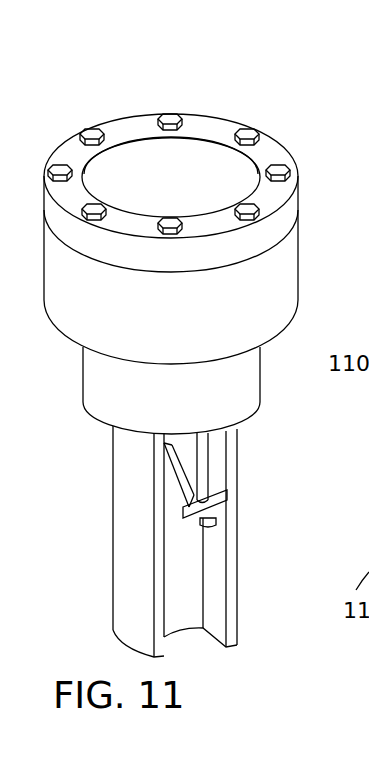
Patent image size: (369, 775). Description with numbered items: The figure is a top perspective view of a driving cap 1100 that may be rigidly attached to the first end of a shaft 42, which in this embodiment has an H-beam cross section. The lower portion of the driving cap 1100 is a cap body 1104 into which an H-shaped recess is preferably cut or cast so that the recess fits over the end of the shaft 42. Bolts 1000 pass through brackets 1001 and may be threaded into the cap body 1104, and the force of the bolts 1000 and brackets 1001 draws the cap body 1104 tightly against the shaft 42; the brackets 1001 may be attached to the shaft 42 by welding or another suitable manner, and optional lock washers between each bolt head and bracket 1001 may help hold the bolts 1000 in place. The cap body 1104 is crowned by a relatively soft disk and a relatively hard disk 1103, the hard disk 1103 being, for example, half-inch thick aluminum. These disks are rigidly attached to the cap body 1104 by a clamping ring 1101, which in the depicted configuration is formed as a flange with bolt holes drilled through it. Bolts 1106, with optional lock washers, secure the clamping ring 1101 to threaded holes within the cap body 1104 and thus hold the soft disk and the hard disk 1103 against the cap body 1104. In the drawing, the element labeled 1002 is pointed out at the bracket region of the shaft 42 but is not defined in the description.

The driving cap 1100 is at (290, 124).
The clamping ring 1101 is at (125, 130).
The relatively hard disk 1103 is at (203, 170).
The cap body 1104 is at (247, 373).
The bolts 1106 is at (95, 128).
The shaft 42 is at (123, 545).
The bolts 1000 is at (203, 468).
The brackets 1001 is at (218, 508).
The bracket 1002 is at (172, 533).